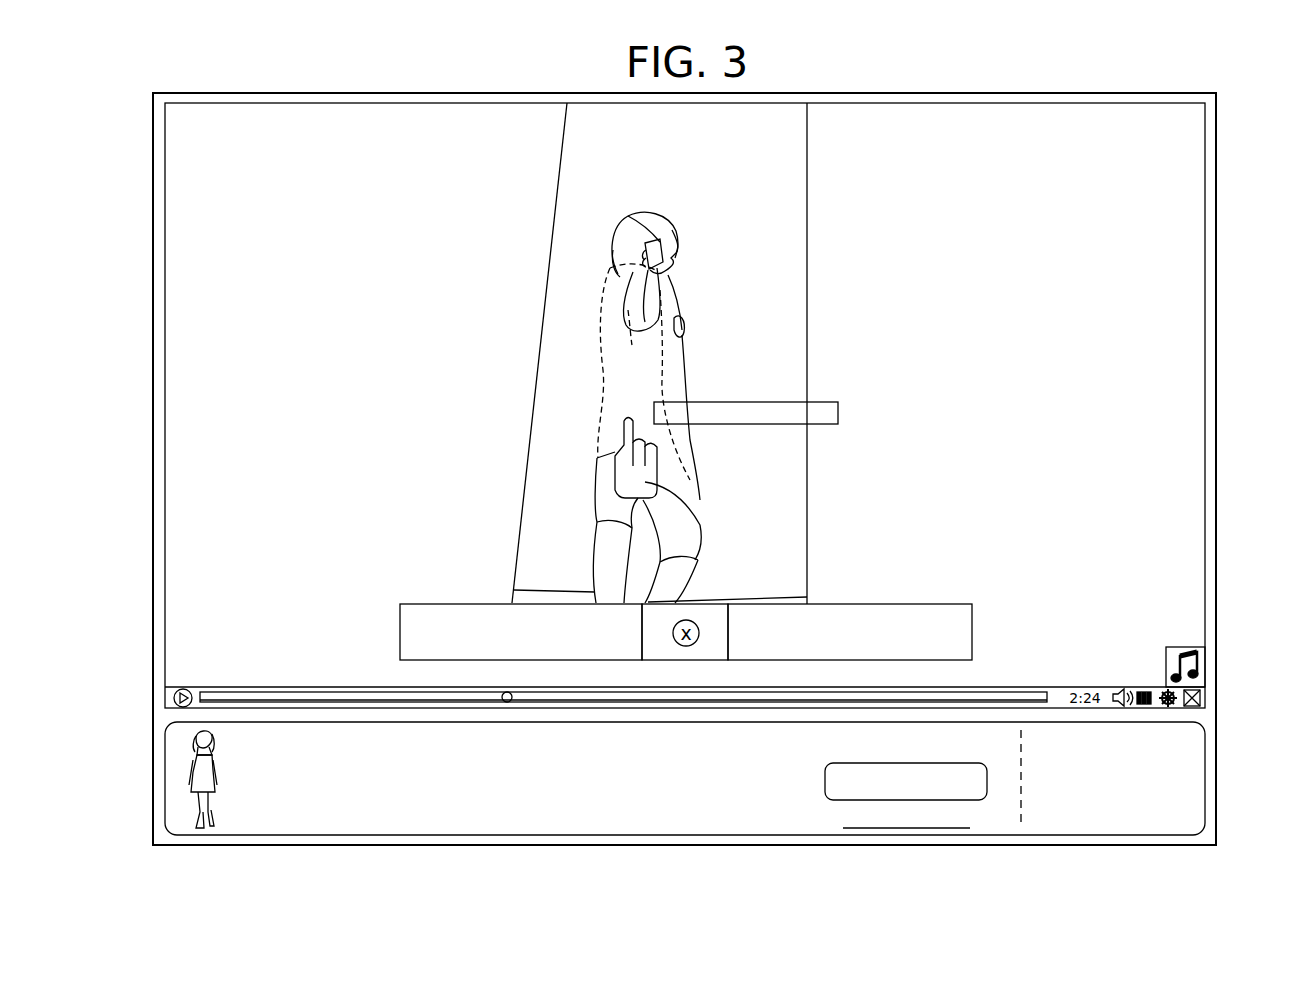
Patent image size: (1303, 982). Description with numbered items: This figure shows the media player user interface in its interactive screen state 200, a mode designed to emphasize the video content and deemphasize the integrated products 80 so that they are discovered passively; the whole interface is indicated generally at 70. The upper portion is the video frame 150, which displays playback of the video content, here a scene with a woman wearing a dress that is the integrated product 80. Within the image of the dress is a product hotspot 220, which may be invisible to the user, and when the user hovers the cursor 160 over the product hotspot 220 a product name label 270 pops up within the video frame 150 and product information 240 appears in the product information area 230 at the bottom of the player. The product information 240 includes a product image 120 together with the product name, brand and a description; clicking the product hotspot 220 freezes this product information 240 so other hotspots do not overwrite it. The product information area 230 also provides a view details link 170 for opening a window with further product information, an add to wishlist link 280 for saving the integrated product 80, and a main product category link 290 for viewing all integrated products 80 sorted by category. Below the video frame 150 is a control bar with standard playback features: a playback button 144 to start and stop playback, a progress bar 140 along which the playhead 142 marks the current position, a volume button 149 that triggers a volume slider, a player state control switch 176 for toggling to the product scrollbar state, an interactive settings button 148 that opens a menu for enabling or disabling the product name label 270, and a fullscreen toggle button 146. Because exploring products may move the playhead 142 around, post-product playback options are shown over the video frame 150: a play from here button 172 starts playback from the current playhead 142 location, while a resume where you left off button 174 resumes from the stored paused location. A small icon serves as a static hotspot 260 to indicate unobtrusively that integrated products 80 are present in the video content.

The interactive screen state 200 is at (1106, 80).
The user interface 70 is at (108, 186).
The video frame 150 is at (1205, 360).
The product hotspot 220 is at (600, 283).
The cursor 160 is at (690, 502).
The product name label 270 is at (749, 402).
The play from here button 172 is at (460, 603).
The resume where you left off button 174 is at (916, 603).
The progress bar 140 is at (153, 657).
The playback button 144 is at (173, 698).
The playhead 142 is at (505, 702).
The volume button 149 is at (1111, 697).
The player state control switch 176 is at (1141, 691).
The interactive settings button 148 is at (1168, 706).
The fullscreen toggle button 146 is at (1200, 697).
The static hotspot 260 is at (1188, 660).
The product information area 230 is at (165, 783).
The product image 120 is at (190, 757).
The integrated product 80 is at (190, 790).
The product information 240 is at (252, 844).
The view details link 170 is at (976, 800).
The add to wishlist link 280 is at (899, 829).
The main product category link 290 is at (1180, 790).